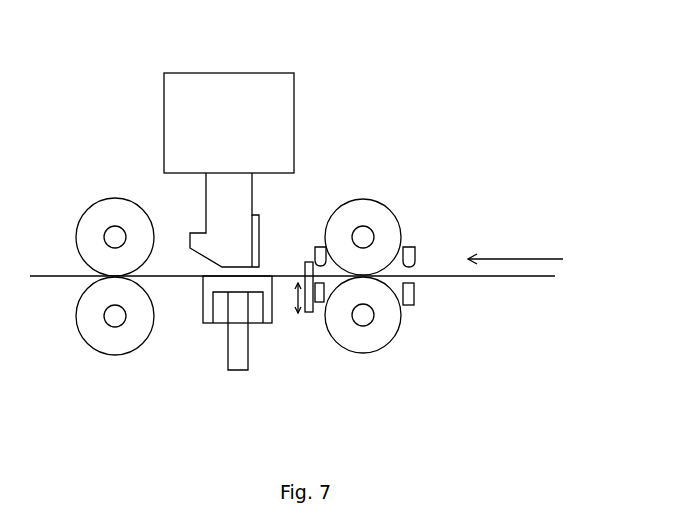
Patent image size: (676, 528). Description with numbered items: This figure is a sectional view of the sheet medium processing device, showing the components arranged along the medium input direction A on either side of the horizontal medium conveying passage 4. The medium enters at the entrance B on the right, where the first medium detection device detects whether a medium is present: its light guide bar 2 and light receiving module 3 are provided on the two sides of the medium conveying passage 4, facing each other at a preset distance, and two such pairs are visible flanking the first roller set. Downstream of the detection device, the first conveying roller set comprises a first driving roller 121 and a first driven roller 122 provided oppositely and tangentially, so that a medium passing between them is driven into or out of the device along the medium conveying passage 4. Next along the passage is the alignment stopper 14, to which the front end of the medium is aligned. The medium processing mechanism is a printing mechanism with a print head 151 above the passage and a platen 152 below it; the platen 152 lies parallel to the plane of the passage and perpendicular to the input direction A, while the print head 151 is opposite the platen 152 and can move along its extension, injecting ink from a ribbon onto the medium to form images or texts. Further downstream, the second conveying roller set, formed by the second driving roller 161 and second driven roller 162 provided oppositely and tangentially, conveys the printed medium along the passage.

The medium conveying passage 4 is at (500, 277).
The medium input direction A is at (515, 250).
The entrance B is at (440, 253).
The print head 151 is at (242, 125).
The platen 152 is at (237, 283).
The alignment stopper 14 is at (309, 302).
The light receiving module 3 is at (321, 246).
The light guide bar 2 is at (321, 295).
The first driven roller 122 is at (365, 213).
The first driving roller 121 is at (378, 323).
The second driven roller 162 is at (105, 215).
The second driving roller 161 is at (110, 338).